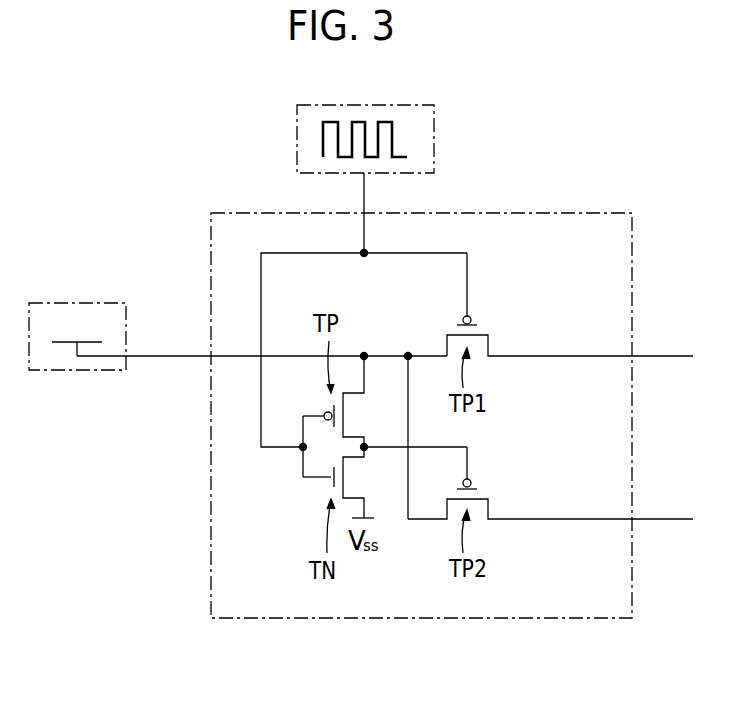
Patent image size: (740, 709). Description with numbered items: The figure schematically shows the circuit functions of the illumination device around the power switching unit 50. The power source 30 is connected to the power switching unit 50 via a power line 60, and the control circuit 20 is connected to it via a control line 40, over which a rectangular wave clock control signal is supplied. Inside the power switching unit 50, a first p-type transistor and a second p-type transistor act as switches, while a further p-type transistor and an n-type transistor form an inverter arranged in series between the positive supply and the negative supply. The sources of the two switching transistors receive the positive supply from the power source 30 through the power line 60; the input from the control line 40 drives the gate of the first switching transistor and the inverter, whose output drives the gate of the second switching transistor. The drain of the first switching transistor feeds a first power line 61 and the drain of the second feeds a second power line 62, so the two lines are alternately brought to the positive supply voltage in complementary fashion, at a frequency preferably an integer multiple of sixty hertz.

The control circuit 20 is at (385, 105).
The power source 30 is at (75, 303).
The control line 40 is at (365, 193).
The power switching unit 50 is at (585, 213).
The power line 60 is at (165, 356).
The first power line 61 is at (677, 356).
The second power line 62 is at (677, 519).